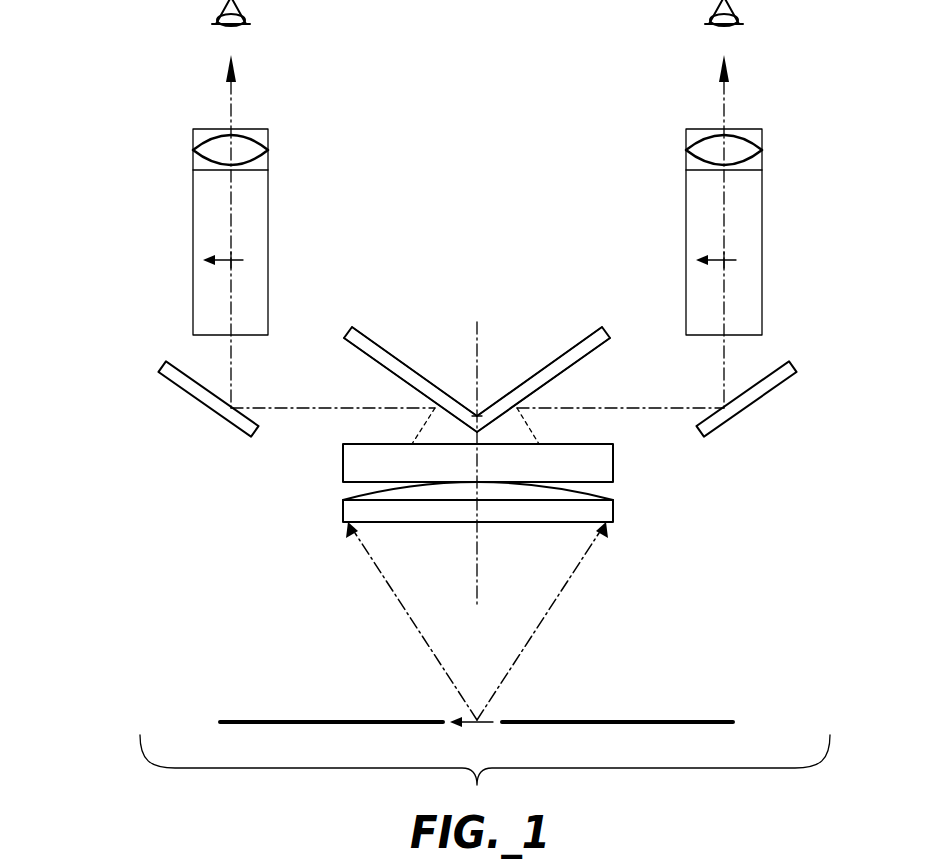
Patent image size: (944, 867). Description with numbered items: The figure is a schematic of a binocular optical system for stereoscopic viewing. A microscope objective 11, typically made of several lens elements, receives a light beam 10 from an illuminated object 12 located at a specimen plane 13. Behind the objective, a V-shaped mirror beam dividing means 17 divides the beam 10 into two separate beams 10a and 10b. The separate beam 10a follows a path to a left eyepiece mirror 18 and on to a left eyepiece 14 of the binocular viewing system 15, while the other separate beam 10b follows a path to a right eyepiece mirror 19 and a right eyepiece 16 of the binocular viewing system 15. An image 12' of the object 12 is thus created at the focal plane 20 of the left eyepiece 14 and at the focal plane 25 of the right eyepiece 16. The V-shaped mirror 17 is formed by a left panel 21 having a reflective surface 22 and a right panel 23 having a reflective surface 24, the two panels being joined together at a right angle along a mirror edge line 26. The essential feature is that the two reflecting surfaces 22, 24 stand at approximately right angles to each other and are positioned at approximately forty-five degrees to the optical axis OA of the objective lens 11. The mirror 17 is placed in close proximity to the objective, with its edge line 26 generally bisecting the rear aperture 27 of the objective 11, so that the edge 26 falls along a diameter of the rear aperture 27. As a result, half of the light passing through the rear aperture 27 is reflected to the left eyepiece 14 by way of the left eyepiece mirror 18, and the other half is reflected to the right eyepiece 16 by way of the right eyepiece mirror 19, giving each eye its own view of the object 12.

The light beam 10 is at (385, 587).
The separate beam 10a is at (325, 406).
The separate beam 10b is at (597, 409).
The microscope objective 11 is at (614, 491).
The illuminated object 12 is at (509, 703).
The image 12' is at (528, 239).
The specimen plane 13 is at (697, 720).
The left eyepiece 14 is at (269, 213).
The binocular viewing system 15 is at (570, 188).
The right eyepiece 16 is at (763, 213).
The V-shaped mirror beam dividing means 17 is at (502, 358).
The left eyepiece mirror 18 is at (183, 377).
The right eyepiece mirror 19 is at (772, 389).
The focal plane 20 is at (253, 259).
The left panel 21 is at (398, 359).
The reflective surface 22 is at (400, 378).
The right panel 23 is at (557, 358).
The reflective surface 24 is at (557, 375).
The focal plane 25 is at (748, 260).
The mirror edge line 26 is at (476, 370).
The rear aperture 27 is at (375, 444).
The optical axis OA is at (475, 585).